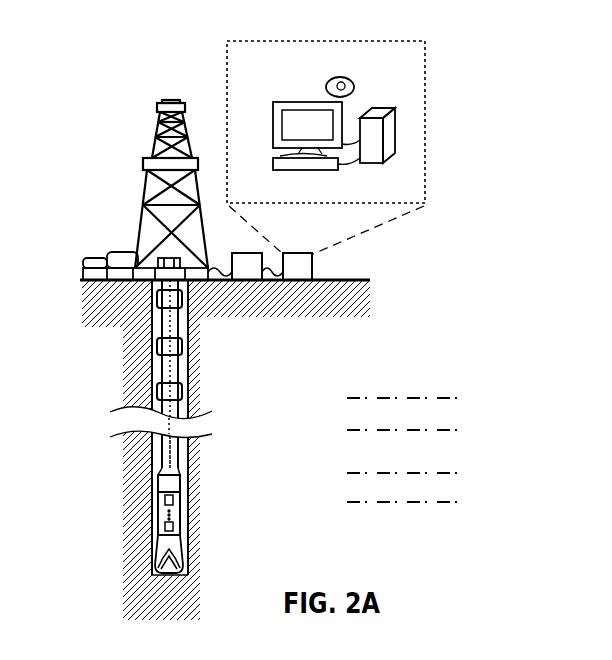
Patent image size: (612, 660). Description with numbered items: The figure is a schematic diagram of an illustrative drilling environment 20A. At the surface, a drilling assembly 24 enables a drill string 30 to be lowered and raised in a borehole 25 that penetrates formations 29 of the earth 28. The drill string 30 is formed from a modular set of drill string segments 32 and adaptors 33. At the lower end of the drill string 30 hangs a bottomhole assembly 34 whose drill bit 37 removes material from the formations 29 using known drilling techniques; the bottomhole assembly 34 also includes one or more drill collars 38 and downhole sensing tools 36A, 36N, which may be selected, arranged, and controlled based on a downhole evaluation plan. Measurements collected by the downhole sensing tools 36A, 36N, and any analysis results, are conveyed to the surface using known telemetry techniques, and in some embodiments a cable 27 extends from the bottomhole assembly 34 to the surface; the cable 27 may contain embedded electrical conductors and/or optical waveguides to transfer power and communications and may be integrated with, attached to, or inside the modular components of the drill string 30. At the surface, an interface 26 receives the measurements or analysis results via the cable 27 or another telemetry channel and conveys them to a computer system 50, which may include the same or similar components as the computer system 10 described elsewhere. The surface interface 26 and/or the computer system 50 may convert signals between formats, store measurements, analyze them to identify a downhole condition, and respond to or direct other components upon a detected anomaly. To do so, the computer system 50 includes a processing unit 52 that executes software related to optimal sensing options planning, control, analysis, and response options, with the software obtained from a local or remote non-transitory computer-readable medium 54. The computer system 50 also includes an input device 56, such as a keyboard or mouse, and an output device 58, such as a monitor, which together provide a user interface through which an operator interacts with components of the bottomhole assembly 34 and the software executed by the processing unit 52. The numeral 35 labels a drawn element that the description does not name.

The drilling environment 20A is at (108, 85).
The drilling assembly 24 is at (77, 105).
The earth 28 is at (133, 310).
The drill string 30 is at (287, 577).
The borehole 25 is at (191, 325).
The drill string segments 32 is at (179, 333).
The adaptors 33 is at (157, 392).
The cable 27 is at (178, 457).
The bottomhole assembly 34 is at (242, 467).
The drill collars 38 is at (178, 479).
The sensor housing 35 is at (179, 510).
The downhole sensing tool 36A is at (163, 500).
The downhole sensing tool 36N is at (163, 527).
The drill bit 37 is at (183, 556).
The interface 26 is at (251, 253).
The computer system 10 is at (313, 265).
The computer system 50 is at (428, 130).
The processing unit 52 is at (378, 110).
The non-transitory computer-readable medium 54 is at (334, 77).
The input device 56 is at (318, 170).
The output device 58 is at (275, 127).
The formations 29 is at (475, 388).